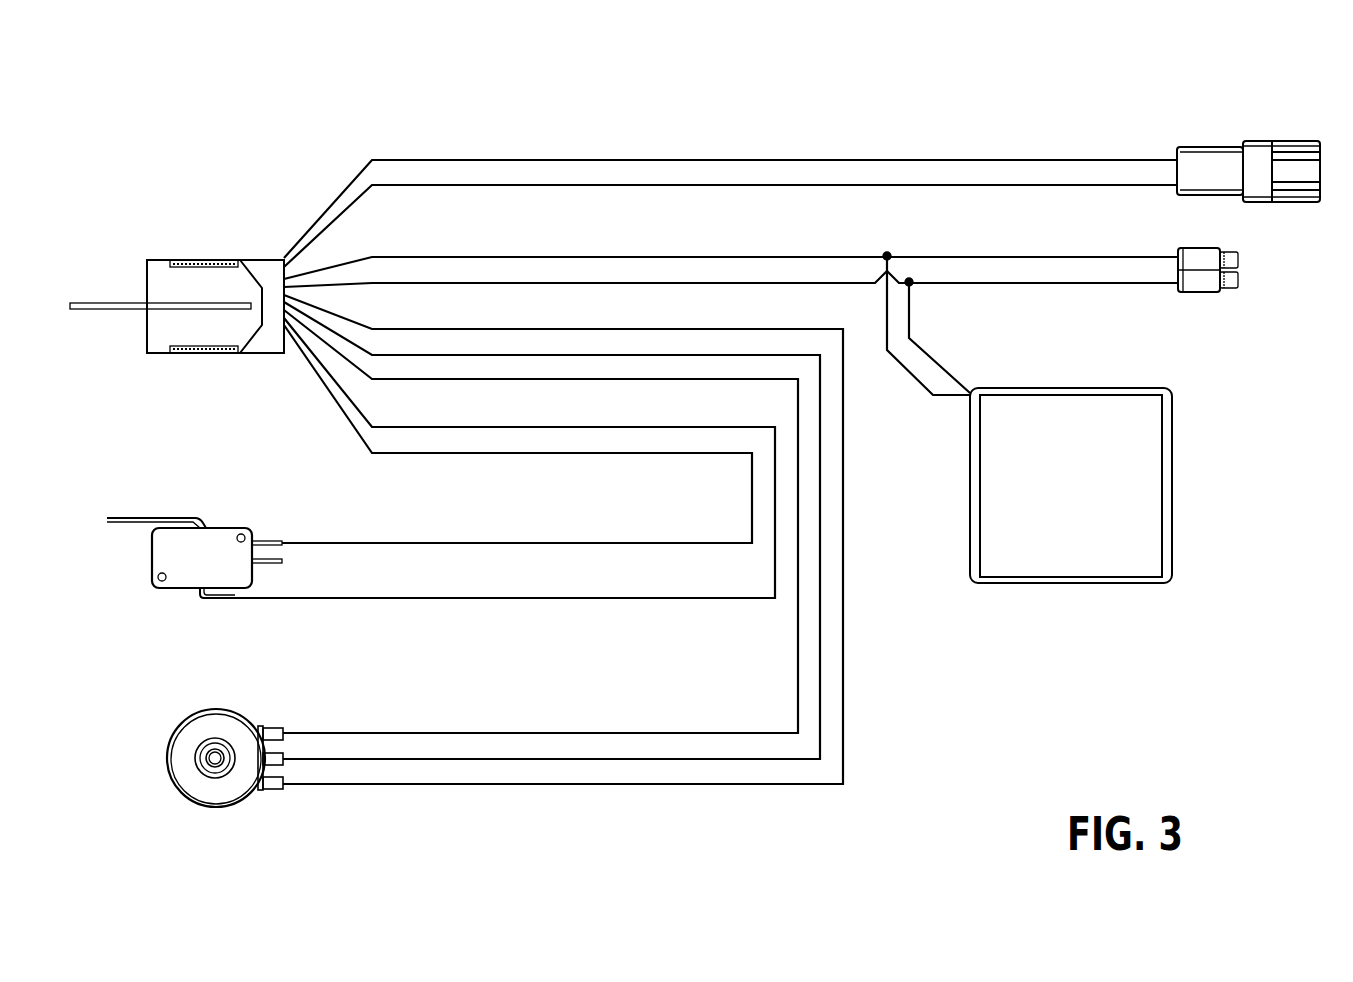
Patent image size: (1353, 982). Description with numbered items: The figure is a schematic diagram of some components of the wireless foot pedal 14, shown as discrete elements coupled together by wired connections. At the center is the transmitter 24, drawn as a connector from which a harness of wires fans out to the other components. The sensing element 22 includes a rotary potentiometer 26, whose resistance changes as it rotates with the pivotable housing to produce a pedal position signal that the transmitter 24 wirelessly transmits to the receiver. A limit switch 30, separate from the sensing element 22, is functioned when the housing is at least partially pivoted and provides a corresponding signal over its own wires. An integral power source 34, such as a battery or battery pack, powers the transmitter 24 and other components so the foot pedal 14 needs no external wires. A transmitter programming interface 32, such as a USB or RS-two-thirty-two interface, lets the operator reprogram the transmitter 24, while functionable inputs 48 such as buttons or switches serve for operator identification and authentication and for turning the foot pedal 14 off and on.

The foot pedal 14 is at (646, 108).
The sensing element 22 is at (200, 795).
The transmitter 24 is at (188, 280).
The rotary potentiometer 26 is at (222, 725).
The limit switch 30 is at (218, 547).
The transmitter programming interface 32 is at (1270, 142).
The power source 34 is at (1067, 528).
The functionable inputs 48 is at (1203, 272).